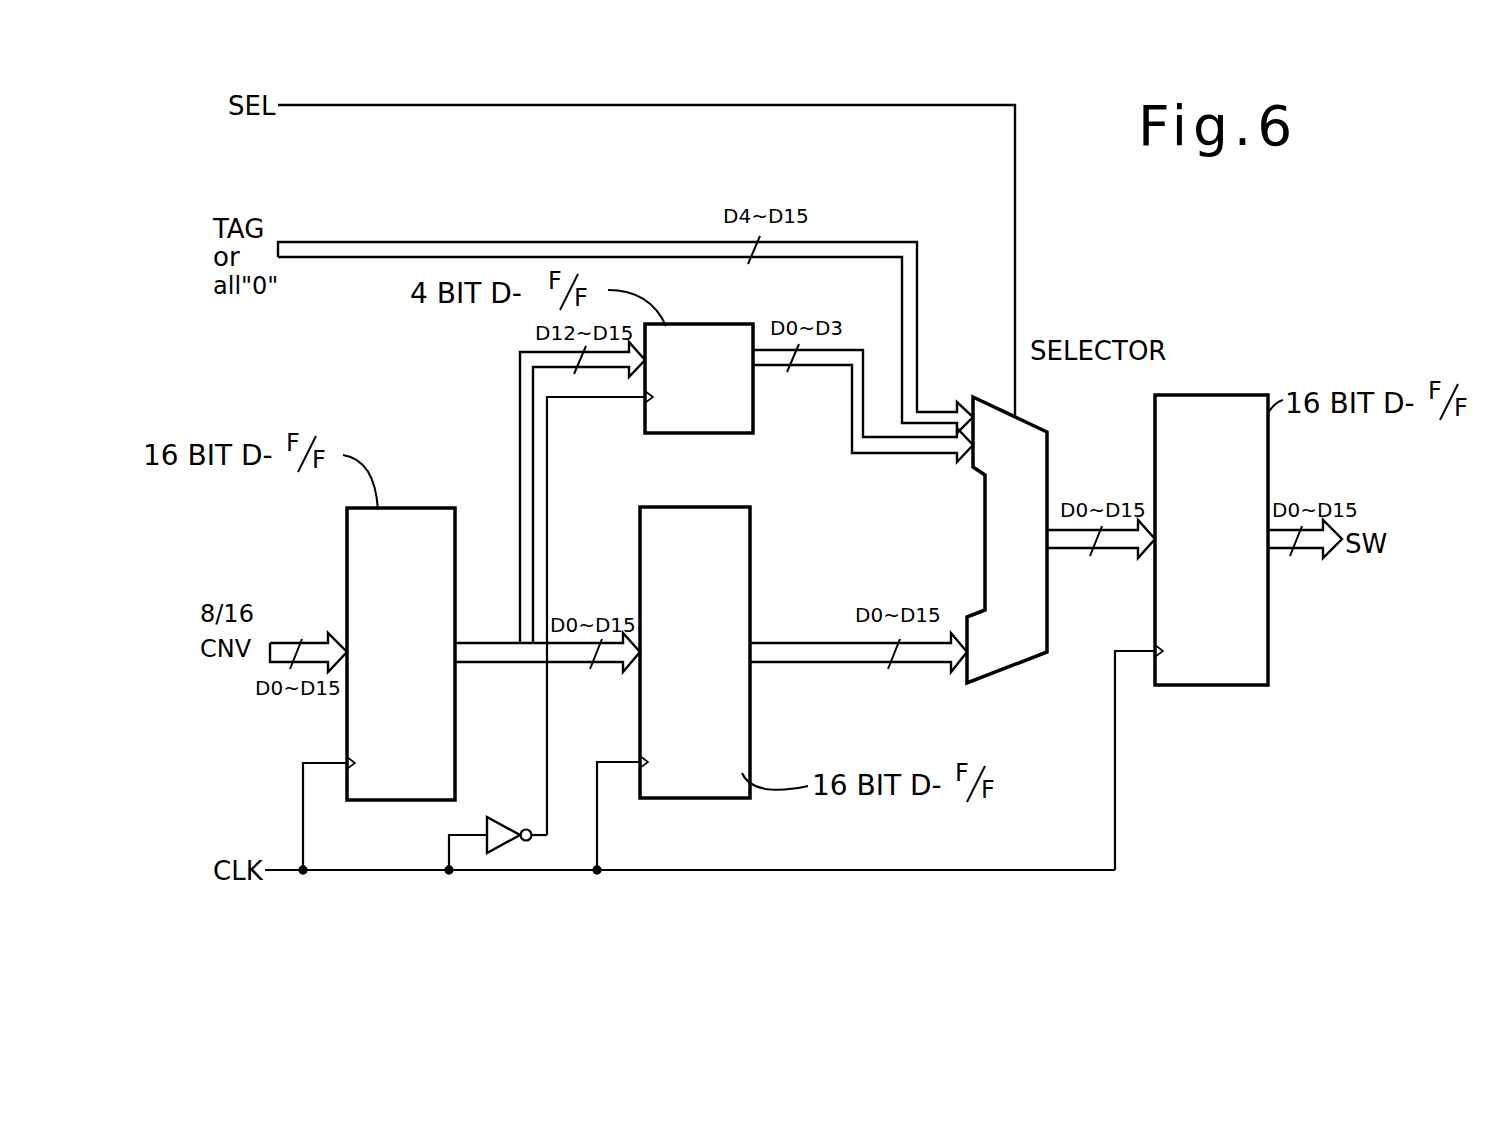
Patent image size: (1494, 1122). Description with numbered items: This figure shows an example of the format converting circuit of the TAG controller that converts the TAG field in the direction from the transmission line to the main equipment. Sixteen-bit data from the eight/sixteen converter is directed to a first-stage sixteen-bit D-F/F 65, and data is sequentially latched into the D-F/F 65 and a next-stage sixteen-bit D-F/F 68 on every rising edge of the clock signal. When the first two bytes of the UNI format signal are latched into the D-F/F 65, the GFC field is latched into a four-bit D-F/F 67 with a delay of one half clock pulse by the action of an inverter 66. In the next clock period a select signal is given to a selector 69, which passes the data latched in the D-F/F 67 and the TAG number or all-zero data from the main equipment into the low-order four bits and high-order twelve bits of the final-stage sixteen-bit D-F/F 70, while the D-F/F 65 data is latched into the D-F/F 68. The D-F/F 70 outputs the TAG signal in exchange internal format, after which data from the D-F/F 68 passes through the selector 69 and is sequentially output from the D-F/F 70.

The 16-bit D-F/F 65 is at (436, 508).
The inverter 66 is at (508, 818).
The 4-bit D-F/F 67 is at (720, 324).
The 16-bit D-F/F 68 is at (714, 506).
The selector 69 is at (1040, 428).
The 16-bit D-F/F 70 is at (1244, 394).